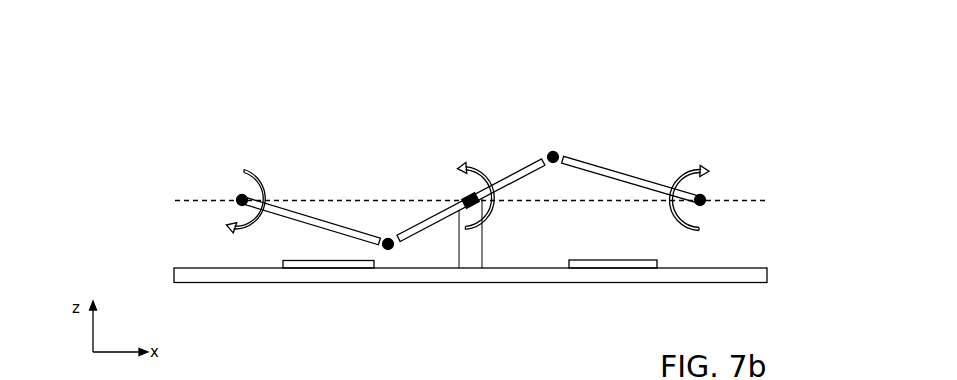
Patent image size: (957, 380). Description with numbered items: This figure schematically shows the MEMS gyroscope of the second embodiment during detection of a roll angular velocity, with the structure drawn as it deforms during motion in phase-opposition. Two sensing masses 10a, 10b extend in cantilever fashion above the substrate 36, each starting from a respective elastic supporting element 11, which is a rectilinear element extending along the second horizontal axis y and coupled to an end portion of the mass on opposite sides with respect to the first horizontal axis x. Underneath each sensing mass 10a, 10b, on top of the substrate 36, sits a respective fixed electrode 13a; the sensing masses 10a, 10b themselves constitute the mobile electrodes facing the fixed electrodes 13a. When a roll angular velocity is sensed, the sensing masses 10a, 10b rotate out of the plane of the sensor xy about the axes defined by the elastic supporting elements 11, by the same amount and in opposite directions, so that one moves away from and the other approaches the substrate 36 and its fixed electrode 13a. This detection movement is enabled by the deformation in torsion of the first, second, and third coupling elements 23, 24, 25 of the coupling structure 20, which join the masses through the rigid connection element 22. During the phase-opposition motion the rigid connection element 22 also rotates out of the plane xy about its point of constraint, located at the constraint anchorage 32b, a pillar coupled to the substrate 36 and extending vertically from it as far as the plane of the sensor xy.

The sensing mass 10a is at (293, 217).
The sensing mass 10b is at (600, 170).
The elastic supporting element 11 is at (242, 200).
The fixed electrode 13a is at (290, 262).
The coupling structure 20 is at (474, 146).
The rigid connection element 22 is at (512, 183).
The first coupling element 23 is at (460, 190).
The second coupling element 24 is at (386, 235).
The third coupling element 25 is at (551, 148).
The constraint anchorage 32b is at (468, 257).
The substrate 36 is at (755, 277).